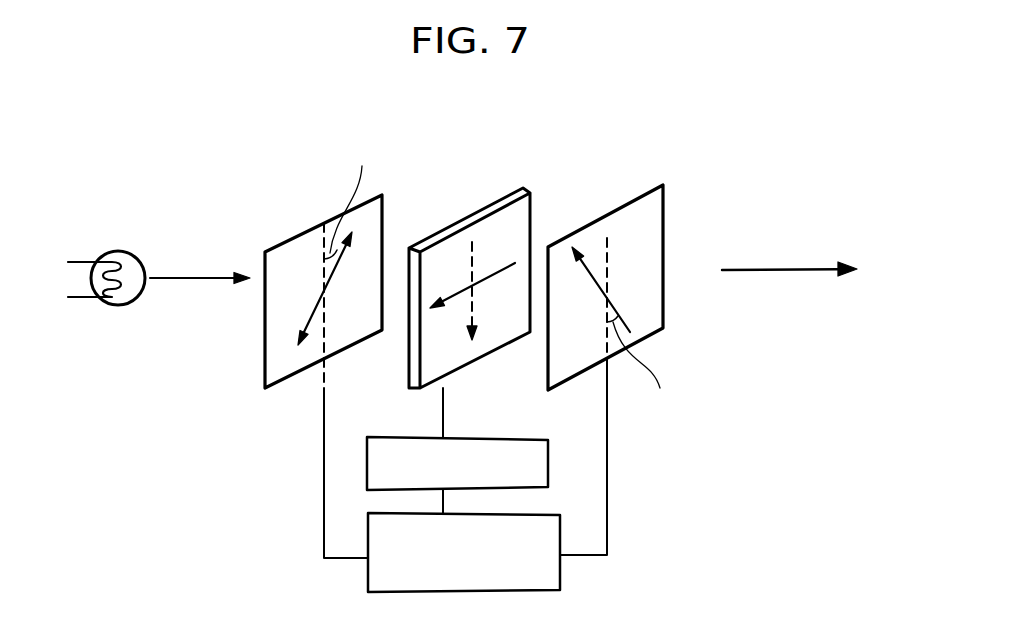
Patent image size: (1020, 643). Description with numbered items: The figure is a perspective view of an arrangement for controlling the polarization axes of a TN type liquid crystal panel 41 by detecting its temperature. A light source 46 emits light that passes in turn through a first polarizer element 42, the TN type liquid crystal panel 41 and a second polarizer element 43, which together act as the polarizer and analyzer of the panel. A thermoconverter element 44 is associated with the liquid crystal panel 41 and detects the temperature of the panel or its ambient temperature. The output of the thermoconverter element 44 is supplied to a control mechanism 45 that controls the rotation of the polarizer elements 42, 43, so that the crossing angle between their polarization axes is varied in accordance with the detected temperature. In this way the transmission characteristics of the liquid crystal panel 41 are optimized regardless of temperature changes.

The TN type liquid crystal panel 41 is at (473, 210).
The polarizer element 42 is at (320, 223).
The polarizer element 43 is at (593, 218).
The thermoconverter element 44 is at (548, 462).
The control mechanism 45 is at (560, 568).
The light source 46 is at (118, 251).